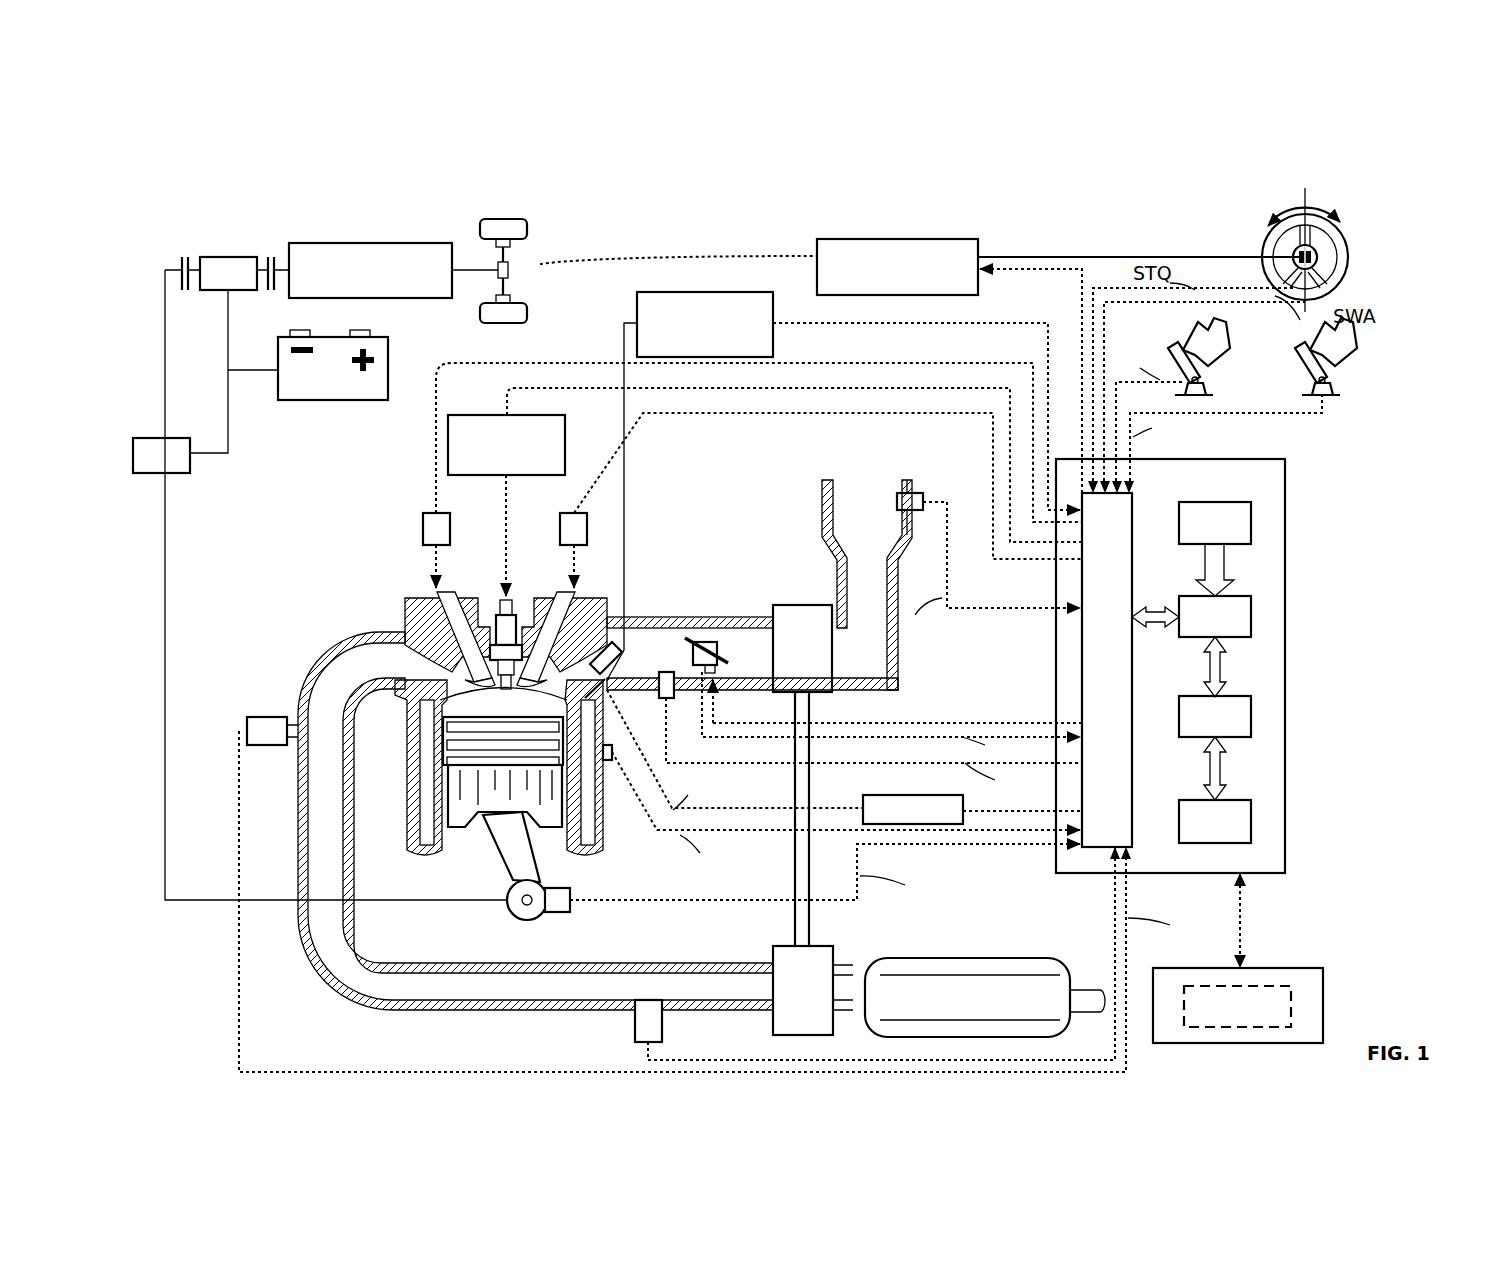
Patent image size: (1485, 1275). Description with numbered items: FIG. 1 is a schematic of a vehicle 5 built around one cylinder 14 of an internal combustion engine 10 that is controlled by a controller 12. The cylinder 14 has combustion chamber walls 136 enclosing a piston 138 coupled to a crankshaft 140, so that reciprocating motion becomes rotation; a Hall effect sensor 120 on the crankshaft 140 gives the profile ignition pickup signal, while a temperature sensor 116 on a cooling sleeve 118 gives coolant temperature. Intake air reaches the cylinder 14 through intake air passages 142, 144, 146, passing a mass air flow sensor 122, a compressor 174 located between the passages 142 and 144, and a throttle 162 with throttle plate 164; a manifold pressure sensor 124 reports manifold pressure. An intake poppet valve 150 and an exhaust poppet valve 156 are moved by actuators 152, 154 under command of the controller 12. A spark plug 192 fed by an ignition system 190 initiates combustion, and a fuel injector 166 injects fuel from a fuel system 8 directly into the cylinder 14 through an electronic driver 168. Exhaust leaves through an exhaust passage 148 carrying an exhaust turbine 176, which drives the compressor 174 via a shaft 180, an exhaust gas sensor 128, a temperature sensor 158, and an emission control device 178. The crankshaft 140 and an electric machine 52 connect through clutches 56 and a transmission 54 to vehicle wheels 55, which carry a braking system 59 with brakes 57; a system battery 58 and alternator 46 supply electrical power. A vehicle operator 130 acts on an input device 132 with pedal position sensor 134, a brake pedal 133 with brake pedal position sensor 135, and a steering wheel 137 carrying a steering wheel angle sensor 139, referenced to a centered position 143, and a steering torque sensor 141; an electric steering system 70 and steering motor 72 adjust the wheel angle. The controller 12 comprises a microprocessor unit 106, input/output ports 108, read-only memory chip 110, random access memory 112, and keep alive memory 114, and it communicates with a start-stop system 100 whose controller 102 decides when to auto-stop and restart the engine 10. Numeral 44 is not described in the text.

The vehicle 5 is at (1412, 218).
The fuel system 8 is at (740, 292).
The internal combustion engine 10 is at (330, 552).
The controller 12 is at (1285, 463).
The cylinder 14 is at (397, 724).
The alternator 44 is at (161, 455).
The alternator 46 is at (165, 478).
The electric machine 52 is at (216, 256).
The transmission 54 is at (430, 298).
The vehicle wheel 55 is at (482, 228).
The clutch 56 is at (181, 257).
The brakes 57 is at (512, 252).
The system battery 58 is at (330, 400).
The braking system 59 is at (520, 292).
The electric steering system 70 is at (955, 238).
The steering motor 72 is at (514, 270).
The start-stop system 100 is at (1290, 960).
The controller 102 is at (1237, 1006).
The microprocessor unit 106 is at (1251, 616).
The input/output ports 108 is at (1135, 505).
The read-only memory chip 110 is at (1251, 522).
The random access memory 112 is at (1251, 717).
The keep alive memory 114 is at (1251, 822).
The temperature sensor 116 is at (612, 822).
The cooling sleeve 118 is at (608, 820).
The Hall effect sensor 120 is at (568, 915).
The mass air flow sensor 122 is at (920, 490).
The MAP sensor 124 is at (668, 725).
The exhaust gas sensor 128 is at (247, 722).
The vehicle operator 130 is at (1210, 345).
The input device 132 is at (1168, 352).
The brake pedal 133 is at (1295, 352).
The pedal position sensor 134 is at (1210, 380).
The brake pedal position sensor 135 is at (1335, 380).
The combustion chamber walls 136 is at (440, 852).
The steering wheel 137 is at (1345, 232).
The piston 138 is at (490, 818).
The steering wheel angle sensor 139 is at (1318, 259).
The crankshaft 140 is at (515, 918).
The steering torque sensor 141 is at (1293, 252).
The intake air passage 142 is at (867, 585).
The centered position 143 is at (1315, 204).
The intake air passage 144 is at (752, 653).
The intake air passage 146 is at (866, 721).
The exhaust passage 148 is at (535, 821).
The intake poppet valve 150 is at (560, 640).
The actuator 152 is at (560, 528).
The actuator 154 is at (422, 520).
The exhaust poppet valve 156 is at (410, 630).
The temperature sensor 158 is at (633, 1035).
The throttle 162 is at (720, 640).
The throttle plate 164 is at (688, 640).
The fuel injector 166 is at (585, 690).
The electronic driver 168 is at (872, 798).
The compressor 174 is at (802, 648).
The exhaust turbine 176 is at (803, 990).
The emission control device 178 is at (1040, 958).
The shaft 180 is at (810, 912).
The ignition system 190 is at (452, 413).
The spark plug 192 is at (497, 640).